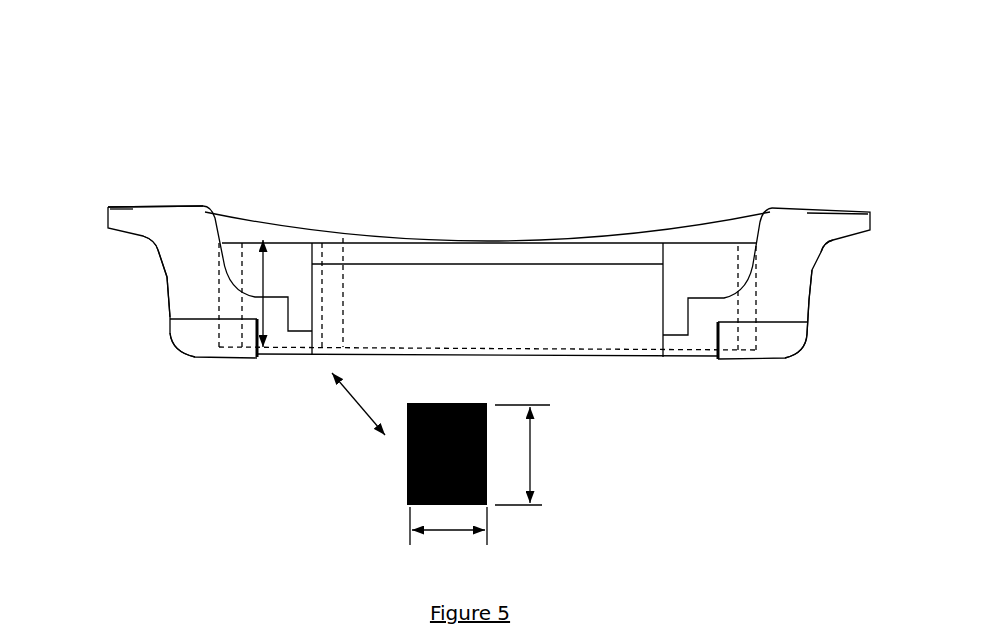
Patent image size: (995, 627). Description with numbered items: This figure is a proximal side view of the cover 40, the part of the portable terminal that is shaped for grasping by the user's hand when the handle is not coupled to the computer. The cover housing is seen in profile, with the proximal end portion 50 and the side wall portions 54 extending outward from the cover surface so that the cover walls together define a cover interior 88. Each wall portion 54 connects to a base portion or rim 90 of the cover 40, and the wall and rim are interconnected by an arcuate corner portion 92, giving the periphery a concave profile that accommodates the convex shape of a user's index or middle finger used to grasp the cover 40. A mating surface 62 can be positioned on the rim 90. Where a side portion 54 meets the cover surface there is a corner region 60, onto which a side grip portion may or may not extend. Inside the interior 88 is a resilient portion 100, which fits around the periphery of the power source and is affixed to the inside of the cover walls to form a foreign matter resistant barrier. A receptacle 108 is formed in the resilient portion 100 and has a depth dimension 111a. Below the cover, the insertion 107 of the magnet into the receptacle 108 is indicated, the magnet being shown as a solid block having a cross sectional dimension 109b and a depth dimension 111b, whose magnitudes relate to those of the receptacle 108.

The cover 40 is at (475, 105).
The proximal end portion/wall 50 is at (710, 117).
The side wall portion 54 is at (165, 292).
The corner region 60 is at (185, 350).
The mating surface 62 is at (118, 206).
The cover interior 88 is at (520, 317).
The base portion (rim) 90 is at (132, 237).
The arcuate corner portion 92 is at (157, 248).
The resilient portion 100 is at (680, 280).
The insertion 107 is at (363, 415).
The receptacle 108 is at (297, 283).
The cross sectional dimension of the magnet 109b is at (445, 530).
The depth dimension of the receptacle 111a is at (265, 272).
The depth dimension of the magnet 111b is at (530, 450).